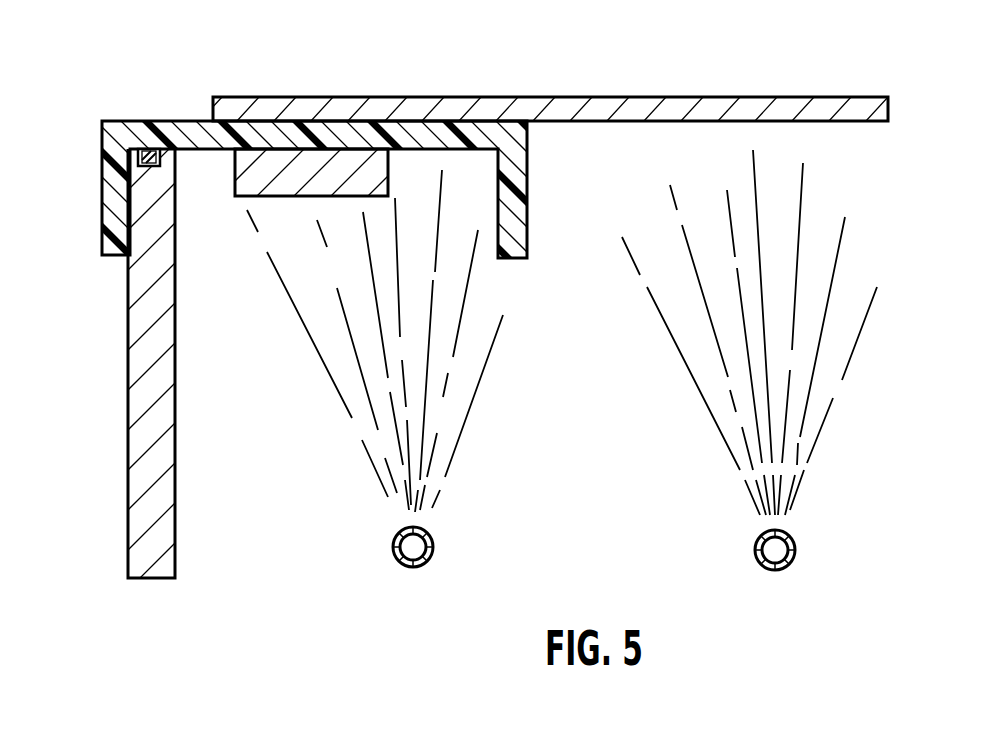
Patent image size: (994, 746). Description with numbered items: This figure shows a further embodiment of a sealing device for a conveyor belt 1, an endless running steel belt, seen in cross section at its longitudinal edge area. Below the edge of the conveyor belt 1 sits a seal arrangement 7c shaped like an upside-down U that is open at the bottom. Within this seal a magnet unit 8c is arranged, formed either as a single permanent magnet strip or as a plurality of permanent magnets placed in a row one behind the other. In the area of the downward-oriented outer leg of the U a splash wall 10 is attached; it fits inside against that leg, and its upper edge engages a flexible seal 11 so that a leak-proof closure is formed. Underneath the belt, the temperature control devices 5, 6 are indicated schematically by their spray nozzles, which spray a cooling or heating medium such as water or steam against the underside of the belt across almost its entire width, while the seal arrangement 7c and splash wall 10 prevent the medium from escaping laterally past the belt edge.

The conveyor belt 1 is at (668, 110).
The seal arrangement 7c is at (172, 131).
The magnet unit 8c is at (281, 183).
The splash wall 10 is at (160, 506).
The flexible seal 11 is at (149, 166).
The temperature control device 5 is at (455, 504).
The temperature control device 6 is at (812, 513).